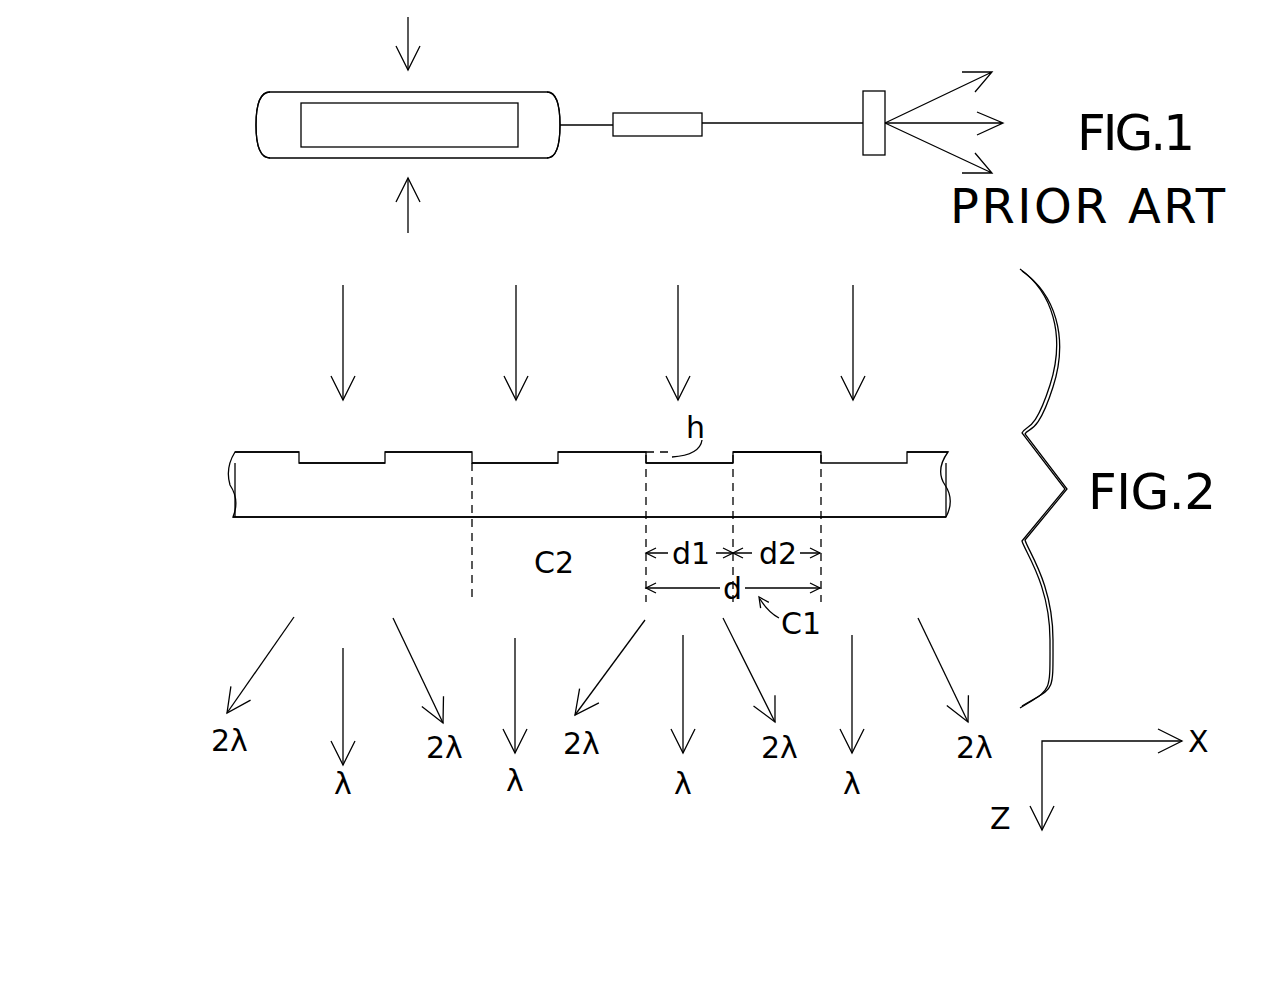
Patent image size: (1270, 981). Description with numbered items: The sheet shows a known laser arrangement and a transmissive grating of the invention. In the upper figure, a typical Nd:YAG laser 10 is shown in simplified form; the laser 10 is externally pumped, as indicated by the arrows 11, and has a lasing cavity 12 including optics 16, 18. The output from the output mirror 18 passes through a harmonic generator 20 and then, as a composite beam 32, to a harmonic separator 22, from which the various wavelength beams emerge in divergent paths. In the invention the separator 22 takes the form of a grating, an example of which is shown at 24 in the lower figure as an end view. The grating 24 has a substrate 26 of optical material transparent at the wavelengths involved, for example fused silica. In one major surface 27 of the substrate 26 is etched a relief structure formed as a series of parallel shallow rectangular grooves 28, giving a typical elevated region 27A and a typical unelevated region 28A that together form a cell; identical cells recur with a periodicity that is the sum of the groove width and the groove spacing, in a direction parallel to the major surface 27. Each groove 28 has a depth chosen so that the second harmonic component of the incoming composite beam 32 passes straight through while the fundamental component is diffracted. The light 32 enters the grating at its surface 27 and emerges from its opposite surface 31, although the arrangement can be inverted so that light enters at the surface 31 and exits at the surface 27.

In FIG. 1, the laser 10 is at (257, 113).
In FIG. 1, the arrows 11 is at (408, 38).
In FIG. 1, the lasing cavity 12 is at (409, 125).
In FIG. 1, the optics 16 is at (258, 133).
In FIG. 1, the output mirror 18 is at (558, 135).
In FIG. 1, the harmonic generator 20 is at (660, 136).
In FIG. 1, the harmonic separator 22 is at (878, 100).
In FIG. 1, the composite beam 32 is at (800, 123).
In FIG. 2, the composite beam 32 is at (678, 309).
In FIG. 2, the grating 24 is at (945, 467).
In FIG. 2, the substrate 26 is at (263, 500).
In FIG. 2, the major surface 27 is at (262, 452).
In FIG. 2, the elevated region 27A is at (784, 451).
In FIG. 2, the grooves 28 is at (505, 463).
In FIG. 2, the unelevated region 28A is at (709, 460).
In FIG. 2, the opposite surface 31 is at (902, 520).